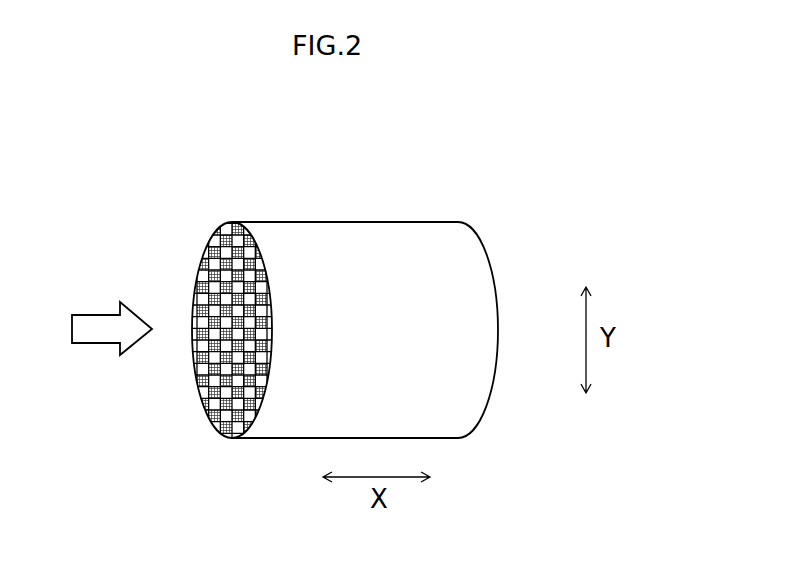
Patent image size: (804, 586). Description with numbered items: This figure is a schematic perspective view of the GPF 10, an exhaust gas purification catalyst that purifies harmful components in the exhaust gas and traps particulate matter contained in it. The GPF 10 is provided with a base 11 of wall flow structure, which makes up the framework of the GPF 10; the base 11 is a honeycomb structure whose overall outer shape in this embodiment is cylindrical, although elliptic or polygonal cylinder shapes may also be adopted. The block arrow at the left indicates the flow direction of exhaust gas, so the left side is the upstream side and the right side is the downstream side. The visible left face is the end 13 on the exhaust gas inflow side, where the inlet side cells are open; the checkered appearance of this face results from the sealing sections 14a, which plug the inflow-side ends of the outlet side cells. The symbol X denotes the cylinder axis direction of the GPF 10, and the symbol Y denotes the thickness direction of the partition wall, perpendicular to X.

The GPF 10 is at (512, 178).
The base 11 is at (397, 235).
The end on the exhaust gas inflow side 13 is at (215, 238).
The sealing section 14a is at (197, 263).